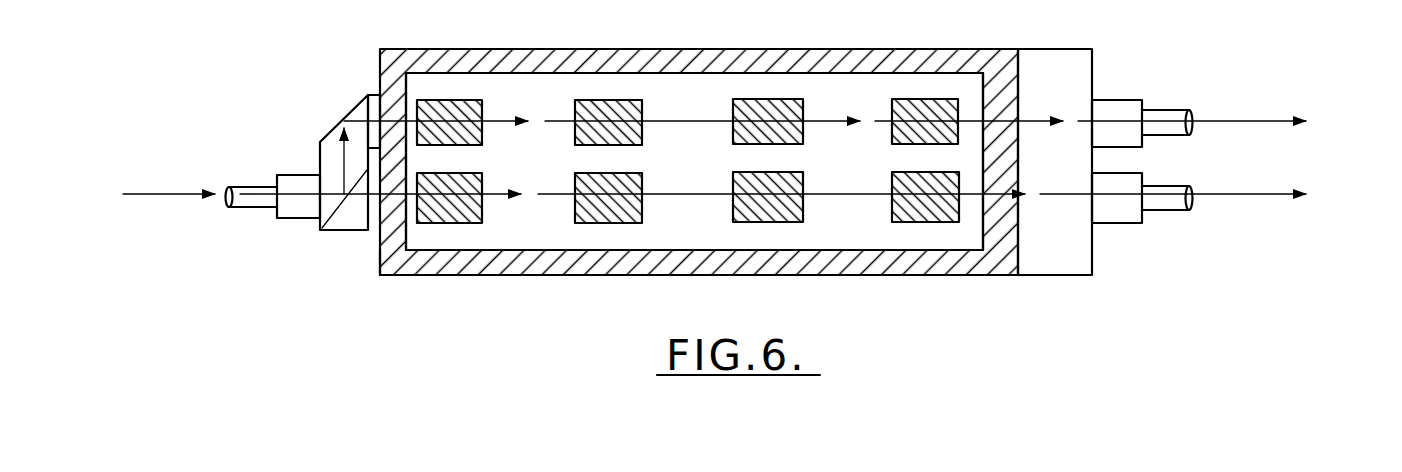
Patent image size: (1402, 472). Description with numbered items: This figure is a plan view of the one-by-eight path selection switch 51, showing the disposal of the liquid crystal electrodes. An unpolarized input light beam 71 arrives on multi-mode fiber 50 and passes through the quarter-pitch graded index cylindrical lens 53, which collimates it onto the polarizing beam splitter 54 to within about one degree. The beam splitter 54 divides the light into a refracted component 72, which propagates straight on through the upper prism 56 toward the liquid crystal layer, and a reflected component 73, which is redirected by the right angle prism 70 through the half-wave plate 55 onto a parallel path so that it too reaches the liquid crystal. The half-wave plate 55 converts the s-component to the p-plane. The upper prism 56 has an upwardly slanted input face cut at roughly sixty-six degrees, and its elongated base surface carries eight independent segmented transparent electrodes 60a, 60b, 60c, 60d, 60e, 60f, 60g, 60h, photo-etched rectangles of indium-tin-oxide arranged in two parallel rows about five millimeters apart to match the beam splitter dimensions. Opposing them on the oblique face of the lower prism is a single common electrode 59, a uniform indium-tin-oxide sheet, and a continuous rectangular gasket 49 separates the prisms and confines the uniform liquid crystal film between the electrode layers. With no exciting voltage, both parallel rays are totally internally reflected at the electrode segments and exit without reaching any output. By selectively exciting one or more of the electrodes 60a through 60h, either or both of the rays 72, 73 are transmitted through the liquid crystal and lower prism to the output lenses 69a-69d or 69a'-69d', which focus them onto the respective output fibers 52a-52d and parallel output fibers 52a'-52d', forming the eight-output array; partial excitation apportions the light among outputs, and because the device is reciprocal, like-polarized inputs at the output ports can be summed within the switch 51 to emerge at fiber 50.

The rectangular gasket 49 is at (442, 276).
The multi-mode fiber 50 is at (253, 208).
The path selection switch 51 is at (588, 318).
The output fibers 52a-52d is at (1170, 192).
The parallel output fibers 52a'-52d' is at (1208, 110).
The quarter-pitch graded index cylindrical lens 53 is at (293, 175).
The polarizing beam splitter 54 is at (333, 232).
The half-wave plate 55 is at (377, 97).
The upper prism 56 is at (978, 276).
The common electrode 59 is at (940, 84).
The segmented transparent electrode 60a is at (483, 210).
The segmented transparent electrode 60b is at (643, 207).
The segmented transparent electrode 60c is at (803, 212).
The segmented transparent electrode 60d is at (892, 187).
The segmented transparent electrode 60e is at (483, 103).
The segmented transparent electrode 60f is at (642, 103).
The segmented transparent electrode 60g is at (806, 102).
The segmented transparent electrode 60h is at (888, 124).
The fiber optic output lenses 69a-69d is at (1127, 224).
The fiber optic output lenses 69a'-69d' is at (1164, 98).
The right angle prism 70 is at (340, 126).
The input light beam 71 is at (160, 198).
The refracted component 72 is at (538, 193).
The reflected component 73 is at (712, 122).